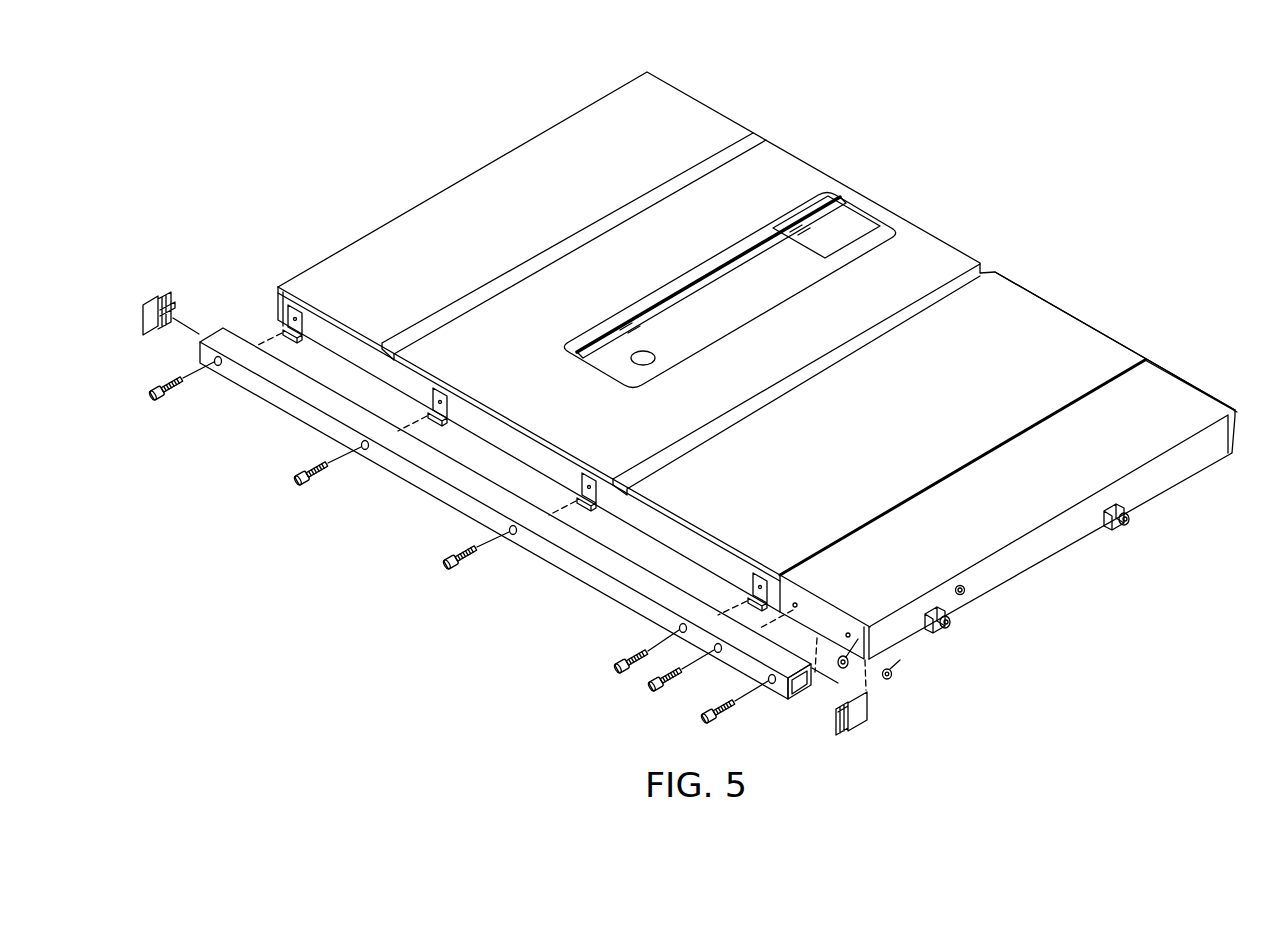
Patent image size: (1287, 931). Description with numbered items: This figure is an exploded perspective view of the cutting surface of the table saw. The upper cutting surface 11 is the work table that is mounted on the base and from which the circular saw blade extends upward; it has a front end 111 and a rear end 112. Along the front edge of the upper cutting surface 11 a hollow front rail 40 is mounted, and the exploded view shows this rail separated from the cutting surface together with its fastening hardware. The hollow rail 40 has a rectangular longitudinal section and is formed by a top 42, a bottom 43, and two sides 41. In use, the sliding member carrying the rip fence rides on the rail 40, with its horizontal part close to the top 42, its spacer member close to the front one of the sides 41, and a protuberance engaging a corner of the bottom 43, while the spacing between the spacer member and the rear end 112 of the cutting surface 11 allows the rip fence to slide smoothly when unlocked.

The upper cutting surface 11 is at (452, 227).
The front end 111 is at (335, 340).
The rear end 112 is at (953, 247).
The hollow front rail 40 is at (505, 522).
The sides 41 is at (302, 407).
The top 42 is at (603, 560).
The bottom 43 is at (803, 697).